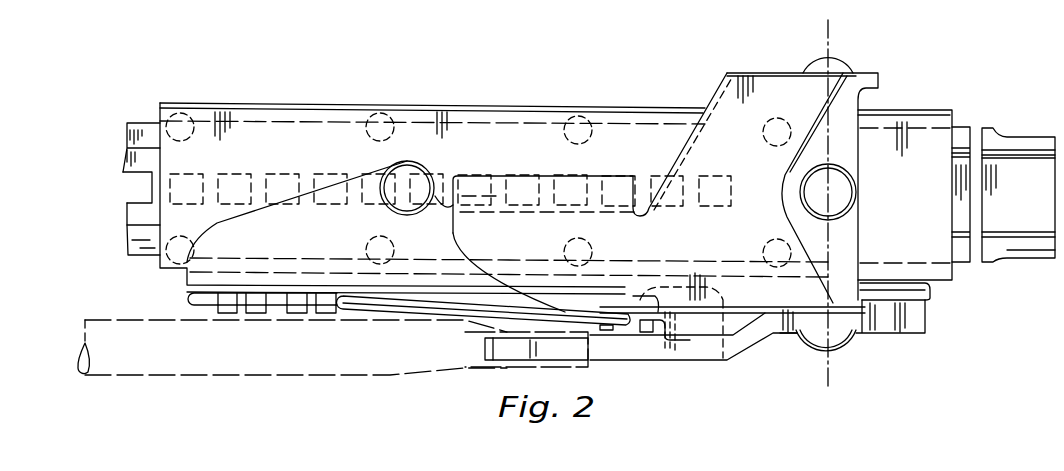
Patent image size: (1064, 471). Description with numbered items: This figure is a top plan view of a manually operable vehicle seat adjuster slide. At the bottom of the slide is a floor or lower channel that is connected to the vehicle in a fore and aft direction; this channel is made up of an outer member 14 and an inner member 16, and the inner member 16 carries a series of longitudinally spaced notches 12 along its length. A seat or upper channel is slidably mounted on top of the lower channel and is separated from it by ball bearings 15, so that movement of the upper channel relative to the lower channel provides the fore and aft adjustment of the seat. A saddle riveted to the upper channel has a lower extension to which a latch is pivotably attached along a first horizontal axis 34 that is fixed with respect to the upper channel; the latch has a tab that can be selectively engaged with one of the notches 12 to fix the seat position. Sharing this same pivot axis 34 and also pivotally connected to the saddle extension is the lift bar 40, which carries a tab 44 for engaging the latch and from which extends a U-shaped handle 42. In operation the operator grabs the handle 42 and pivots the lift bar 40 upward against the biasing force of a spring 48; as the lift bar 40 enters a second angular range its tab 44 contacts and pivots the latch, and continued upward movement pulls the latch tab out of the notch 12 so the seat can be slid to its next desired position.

The notches 12 is at (136, 177).
The outer member 14 is at (128, 131).
The ball bearings 15 is at (576, 116).
The inner member 16 is at (127, 209).
The first horizontal axis 34 is at (830, 35).
The lift bar 40 is at (620, 352).
The handle 42 is at (390, 376).
The tab 44 is at (717, 325).
The spring 48 is at (647, 332).